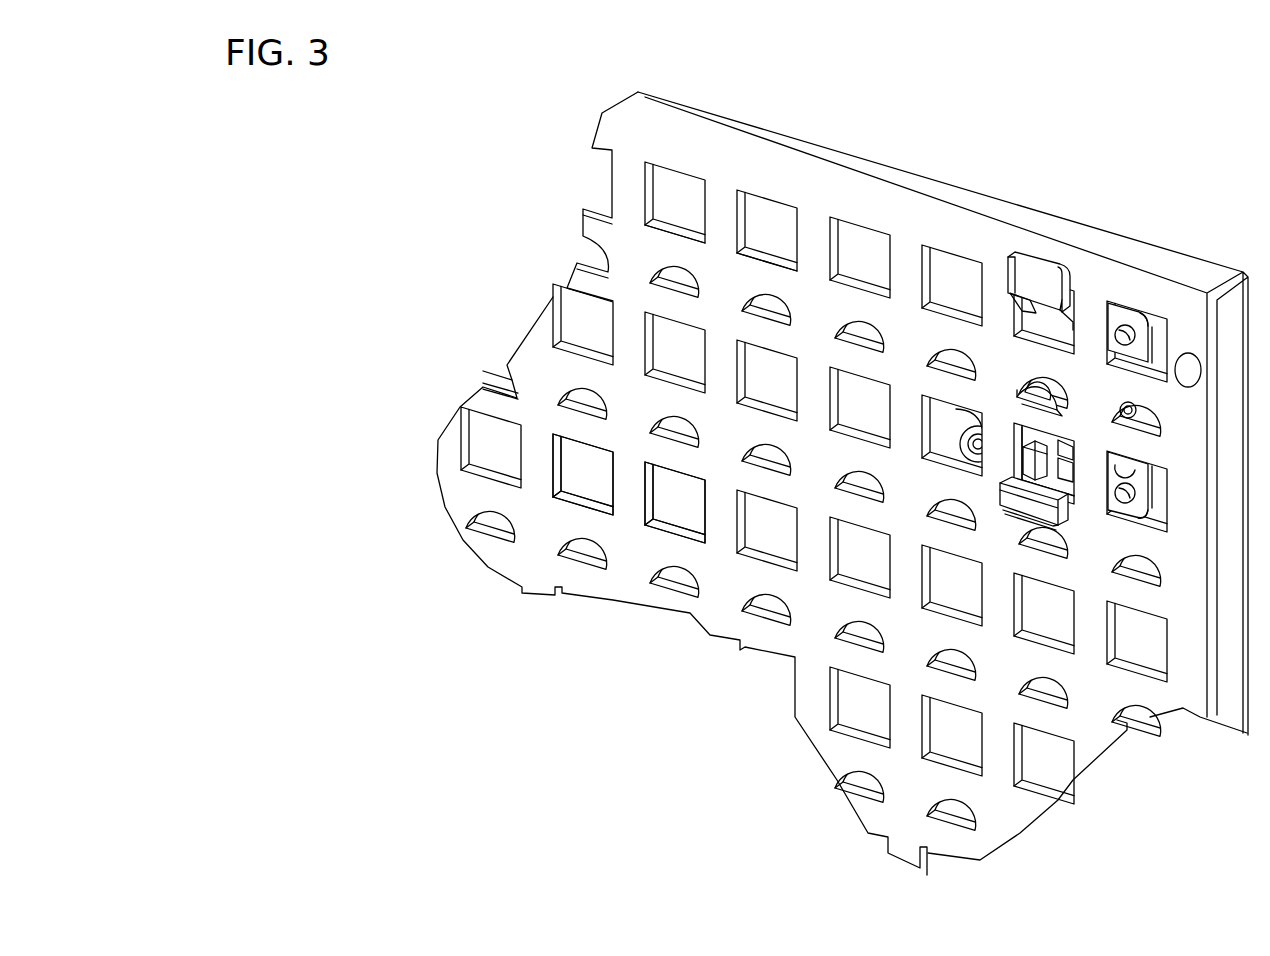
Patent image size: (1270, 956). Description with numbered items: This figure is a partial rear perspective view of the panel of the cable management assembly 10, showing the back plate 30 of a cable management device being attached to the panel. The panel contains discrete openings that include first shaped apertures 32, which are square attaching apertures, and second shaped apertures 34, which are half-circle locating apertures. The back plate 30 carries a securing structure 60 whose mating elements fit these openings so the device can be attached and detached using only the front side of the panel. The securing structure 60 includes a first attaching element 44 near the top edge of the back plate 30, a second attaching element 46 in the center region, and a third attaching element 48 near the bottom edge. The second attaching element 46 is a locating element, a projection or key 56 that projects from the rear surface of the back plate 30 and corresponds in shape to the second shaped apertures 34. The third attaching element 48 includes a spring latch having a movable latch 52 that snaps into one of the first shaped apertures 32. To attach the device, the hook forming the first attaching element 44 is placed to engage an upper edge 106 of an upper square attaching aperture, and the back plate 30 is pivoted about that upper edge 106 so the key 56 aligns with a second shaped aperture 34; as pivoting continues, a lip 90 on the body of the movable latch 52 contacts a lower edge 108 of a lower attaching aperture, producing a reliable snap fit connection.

The cable management assembly 10 is at (515, 172).
The back plate 30 is at (965, 420).
The first shaped apertures 32 is at (657, 530).
The second shaped apertures 34 is at (768, 618).
The first attaching element 44 is at (1030, 277).
The second attaching element 46 is at (1060, 398).
The third attaching element 48 is at (1043, 508).
The movable latch 52 is at (1022, 497).
The key 56 is at (1028, 392).
The securing structure 60 is at (1072, 372).
The lip 90 is at (1043, 512).
The upper edge 106 is at (767, 197).
The lower edge 108 is at (767, 263).